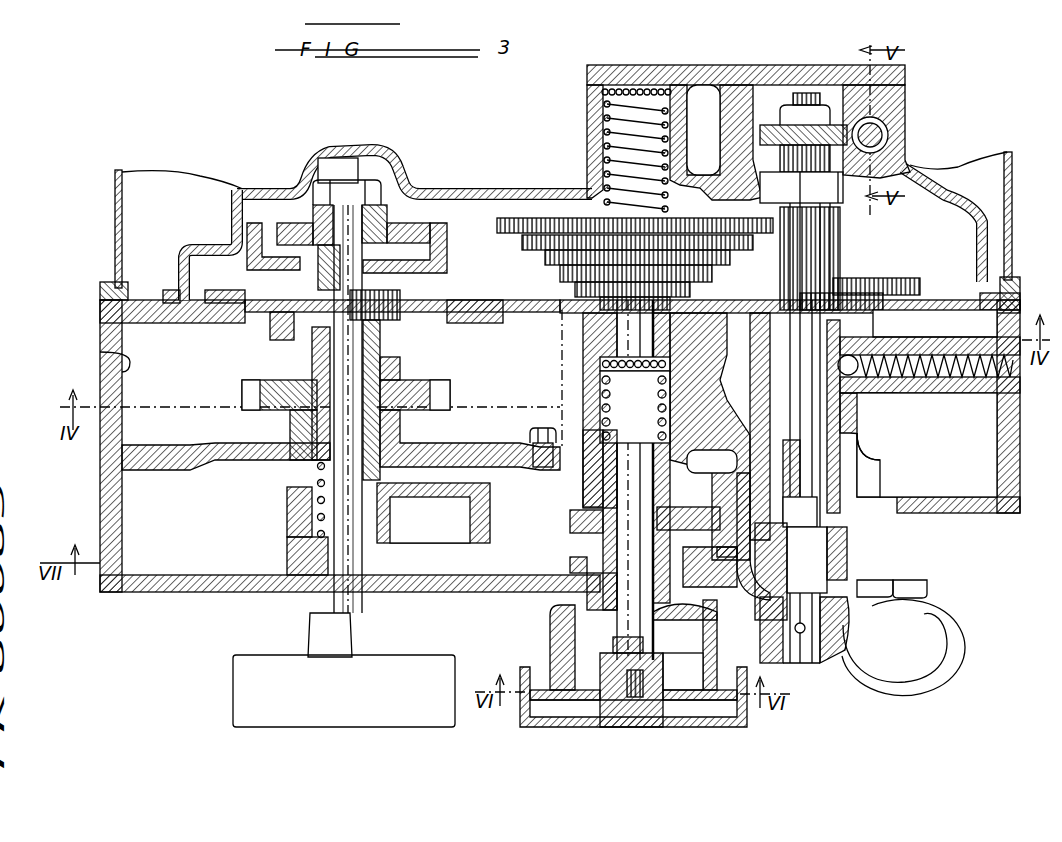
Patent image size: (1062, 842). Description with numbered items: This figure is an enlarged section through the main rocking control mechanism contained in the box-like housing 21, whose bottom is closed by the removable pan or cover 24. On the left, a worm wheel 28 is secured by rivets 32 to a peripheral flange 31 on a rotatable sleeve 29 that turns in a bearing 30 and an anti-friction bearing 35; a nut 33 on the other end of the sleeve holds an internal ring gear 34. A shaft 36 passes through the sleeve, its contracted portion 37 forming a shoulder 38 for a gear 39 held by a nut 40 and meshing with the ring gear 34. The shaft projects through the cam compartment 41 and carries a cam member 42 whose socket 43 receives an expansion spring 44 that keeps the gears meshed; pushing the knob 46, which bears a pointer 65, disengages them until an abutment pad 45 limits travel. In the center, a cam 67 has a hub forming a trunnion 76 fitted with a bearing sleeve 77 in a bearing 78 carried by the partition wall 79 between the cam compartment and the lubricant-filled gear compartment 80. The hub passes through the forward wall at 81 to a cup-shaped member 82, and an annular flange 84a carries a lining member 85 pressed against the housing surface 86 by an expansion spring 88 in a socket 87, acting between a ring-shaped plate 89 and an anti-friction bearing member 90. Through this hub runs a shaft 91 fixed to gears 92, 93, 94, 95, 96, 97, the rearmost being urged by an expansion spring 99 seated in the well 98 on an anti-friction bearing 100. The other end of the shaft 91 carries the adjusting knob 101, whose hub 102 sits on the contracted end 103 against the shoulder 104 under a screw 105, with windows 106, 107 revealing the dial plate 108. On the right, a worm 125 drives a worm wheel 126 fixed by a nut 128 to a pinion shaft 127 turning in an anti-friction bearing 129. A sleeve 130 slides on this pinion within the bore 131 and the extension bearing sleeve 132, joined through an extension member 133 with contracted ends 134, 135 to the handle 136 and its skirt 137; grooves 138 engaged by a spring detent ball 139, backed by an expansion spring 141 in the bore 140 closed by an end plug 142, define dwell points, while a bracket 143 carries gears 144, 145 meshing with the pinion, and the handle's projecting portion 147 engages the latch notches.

The housing 21 is at (175, 592).
The pan or cover 24 is at (122, 225).
The worm wheel 28 is at (270, 390).
The sleeve 29 is at (390, 356).
The bearing 30 is at (400, 430).
The peripheral flange 31 is at (395, 385).
The rivets 32 is at (385, 367).
The nut 33 is at (385, 240).
The internal ring gear 34 is at (447, 262).
The anti-friction bearing 35 is at (290, 300).
The shaft 36 is at (300, 348).
The contracted portion 37 is at (362, 220).
The shoulder 38 is at (350, 240).
The gear 39 is at (300, 233).
The nut 40 is at (320, 168).
The cam compartment 41 is at (460, 575).
The cam member 42 is at (433, 513).
The socket 43 is at (385, 497).
The expansion spring 44 is at (320, 482).
The abutment pad 45 is at (360, 152).
The knob 46 is at (233, 695).
The pointer 65 is at (352, 640).
The cam 67 is at (580, 520).
The trunnion 76 is at (660, 493).
The bearing sleeve 77 is at (600, 487).
The bearing 78 is at (690, 435).
The partition wall 79 is at (465, 450).
The gear compartment 80 is at (100, 352).
The forward wall portion 81 is at (700, 598).
The cup-shaped member 82 is at (550, 635).
The annular flange 84a is at (585, 522).
The lining member 85 is at (570, 565).
The surface 86 is at (570, 565).
The socket 87 is at (670, 395).
The expansion spring 88 is at (602, 395).
The ring-shaped plate 89 is at (543, 428).
The anti-friction bearing member 90 is at (612, 345).
The shaft 91 is at (640, 548).
The gear 92 is at (590, 318).
The gear 93 is at (600, 292).
The gear 94 is at (705, 275).
The gear 95 is at (735, 262).
The gear 96 is at (735, 245).
The gear 97 is at (740, 218).
The socket or well 98 is at (610, 145).
The expansion spring 99 is at (660, 140).
The anti-friction bearing 100 is at (622, 110).
The adjusting knob 101 is at (520, 727).
The central hub portion 102 is at (665, 668).
The contracted end portion 103 is at (625, 675).
The shoulder 104 is at (618, 645).
The screw 105 is at (640, 720).
The window 106 is at (548, 720).
The window 107 is at (700, 718).
The dial plate 108 is at (545, 690).
The worm 125 is at (875, 135).
The worm wheel 126 is at (785, 125).
The pinion shaft 127 is at (835, 240).
The nut 128 is at (810, 108).
The anti-friction bearing 129 is at (840, 203).
The sleeve 130 is at (870, 422).
The housing bore 131 is at (870, 405).
The extension bearing sleeve 132 is at (855, 505).
The extension member 133 is at (810, 575).
The contracted end 134 is at (820, 513).
The contracted end 135 is at (795, 650).
The handle 136 is at (940, 620).
The skirt portion 137 is at (850, 585).
The grooves 138 is at (830, 405).
The spring detent ball 139 is at (930, 332).
The bore 140 is at (925, 393).
The expansion spring 141 is at (930, 437).
The end plug 142 is at (993, 403).
The bracket 143 is at (757, 338).
The gear 144 is at (890, 300).
The gear 145 is at (895, 278).
The projecting portion 147 is at (925, 588).